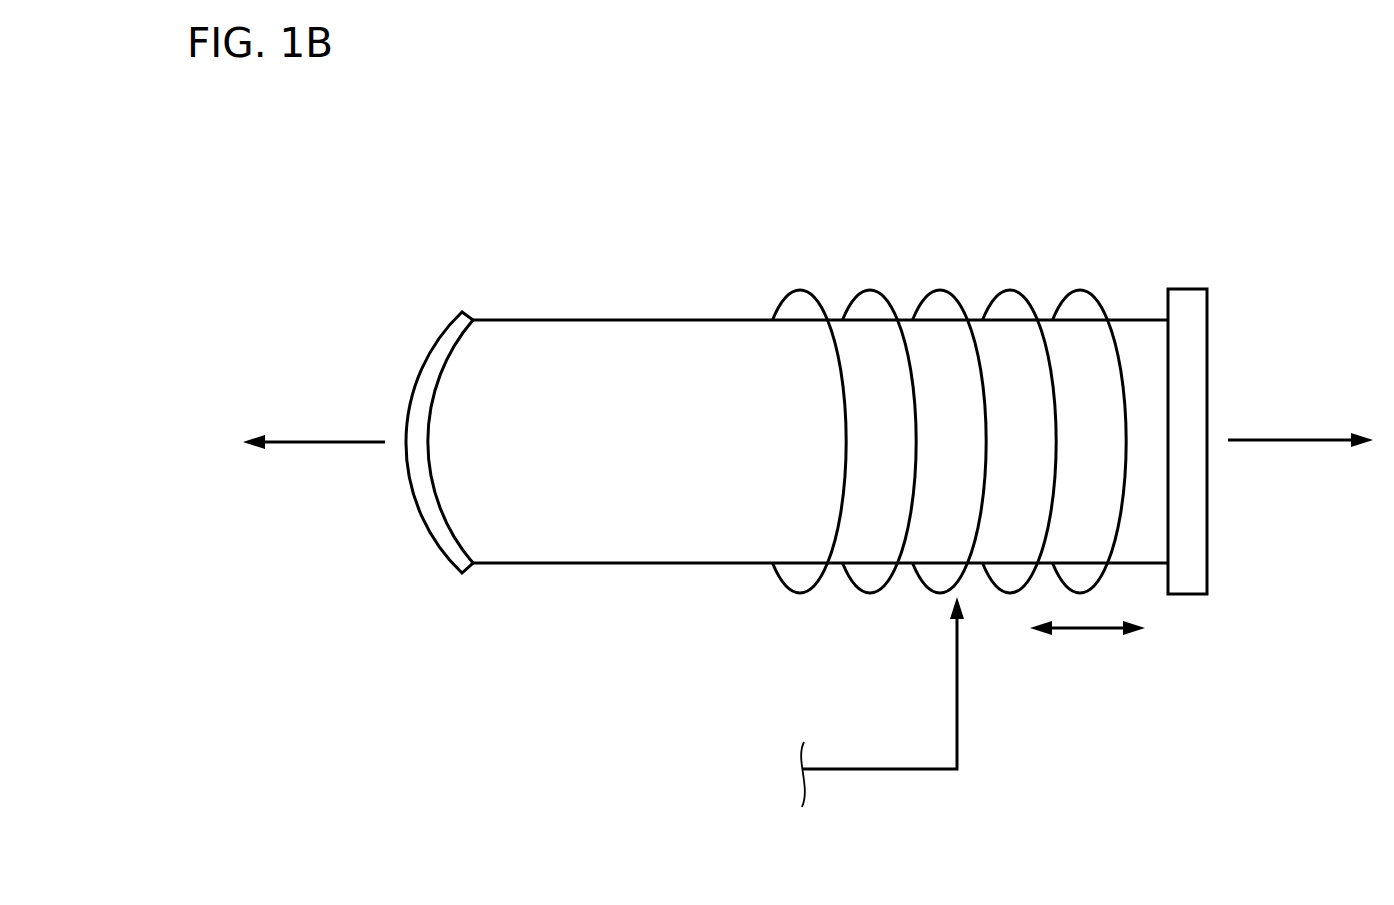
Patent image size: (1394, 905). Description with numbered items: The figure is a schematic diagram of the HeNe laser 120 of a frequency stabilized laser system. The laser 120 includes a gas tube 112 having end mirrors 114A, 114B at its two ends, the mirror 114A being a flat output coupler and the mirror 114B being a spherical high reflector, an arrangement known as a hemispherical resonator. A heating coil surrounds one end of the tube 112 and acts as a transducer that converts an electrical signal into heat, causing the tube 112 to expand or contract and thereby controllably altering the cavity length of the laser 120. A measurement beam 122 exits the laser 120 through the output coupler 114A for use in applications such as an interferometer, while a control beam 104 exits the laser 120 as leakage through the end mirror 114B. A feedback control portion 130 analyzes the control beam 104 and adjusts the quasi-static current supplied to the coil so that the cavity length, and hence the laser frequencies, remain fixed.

The control beam 104 is at (320, 442).
The gas tube 112 is at (617, 320).
The end mirror (flat output coupler) 114A is at (1195, 302).
The end mirror (spherical high reflector) 114B is at (450, 563).
The laser 120 is at (829, 166).
The measurement beam 122 is at (1306, 442).
The feedback control portion 130 is at (888, 769).